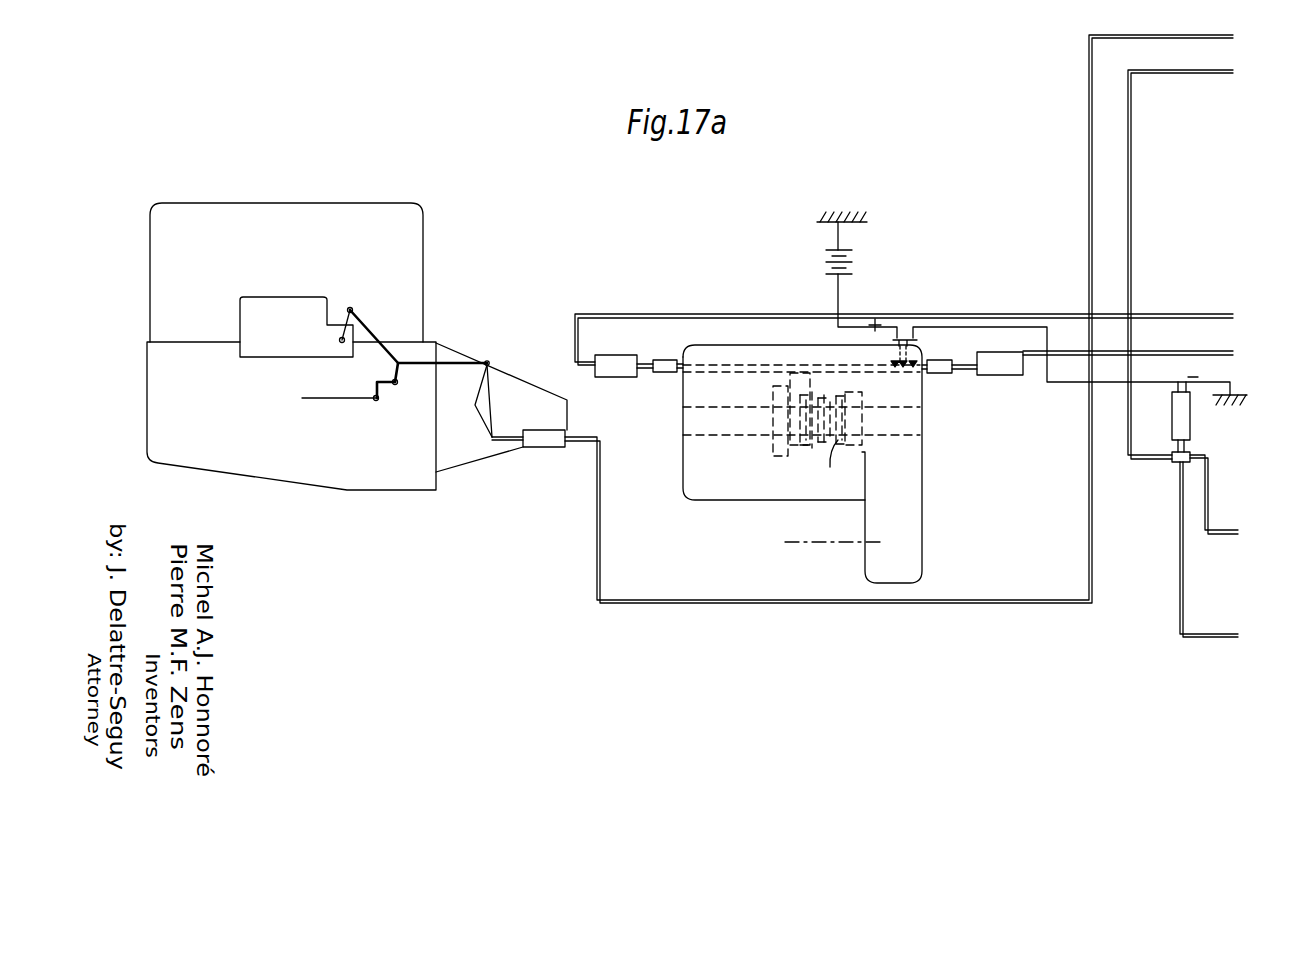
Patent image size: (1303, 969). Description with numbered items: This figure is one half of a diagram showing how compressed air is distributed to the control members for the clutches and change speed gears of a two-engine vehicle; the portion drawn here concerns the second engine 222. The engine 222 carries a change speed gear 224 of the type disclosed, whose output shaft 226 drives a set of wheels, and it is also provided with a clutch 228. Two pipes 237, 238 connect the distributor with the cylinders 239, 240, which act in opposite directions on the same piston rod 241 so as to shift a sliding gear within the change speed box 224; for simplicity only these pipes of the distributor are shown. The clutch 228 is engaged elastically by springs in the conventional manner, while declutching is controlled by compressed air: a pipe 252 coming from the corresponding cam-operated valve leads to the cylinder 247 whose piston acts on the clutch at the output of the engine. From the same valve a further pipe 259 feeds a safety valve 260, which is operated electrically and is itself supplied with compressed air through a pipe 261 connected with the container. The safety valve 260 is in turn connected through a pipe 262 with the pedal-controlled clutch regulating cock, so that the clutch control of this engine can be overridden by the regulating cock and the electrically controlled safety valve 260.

The engine 222 is at (238, 462).
The clutch 228 is at (447, 360).
The cylinder for the clutch-controlling piston 247 is at (543, 440).
The pipe 252 is at (1213, 37).
The pipe 259 is at (1217, 72).
The pipe 237 is at (1155, 314).
The pipe 238 is at (1177, 351).
The cylinder 239 is at (615, 365).
The change speed gear 224 is at (908, 513).
The output shaft 226 is at (862, 545).
The piston rod 241 is at (965, 370).
The cylinder 240 is at (1019, 372).
The safety valve 260 is at (1175, 458).
The pipe 262 is at (1227, 535).
The pipe 261 is at (1207, 634).